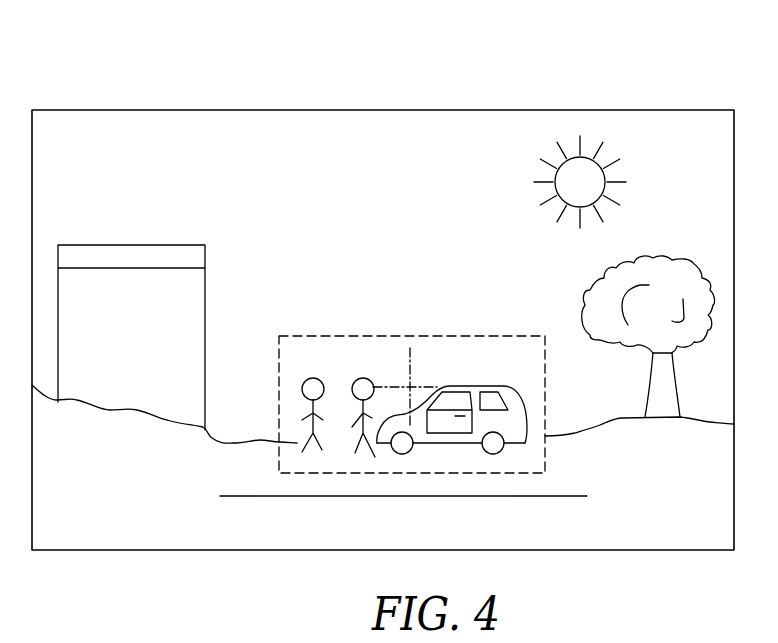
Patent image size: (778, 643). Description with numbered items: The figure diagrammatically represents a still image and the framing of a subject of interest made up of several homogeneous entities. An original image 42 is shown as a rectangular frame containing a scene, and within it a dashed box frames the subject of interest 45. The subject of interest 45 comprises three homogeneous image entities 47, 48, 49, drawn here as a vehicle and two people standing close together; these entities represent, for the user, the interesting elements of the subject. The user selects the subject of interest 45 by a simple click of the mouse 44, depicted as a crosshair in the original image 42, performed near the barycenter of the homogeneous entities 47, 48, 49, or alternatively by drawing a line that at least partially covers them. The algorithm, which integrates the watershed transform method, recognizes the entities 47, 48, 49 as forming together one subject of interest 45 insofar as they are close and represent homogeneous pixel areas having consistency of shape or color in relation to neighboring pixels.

The original image 42 is at (322, 122).
The mouse click 44 is at (410, 367).
The subject of interest 45 is at (482, 474).
The homogeneous image entity 47 is at (512, 428).
The homogeneous image entity 48 is at (352, 452).
The homogeneous image entity 49 is at (304, 442).